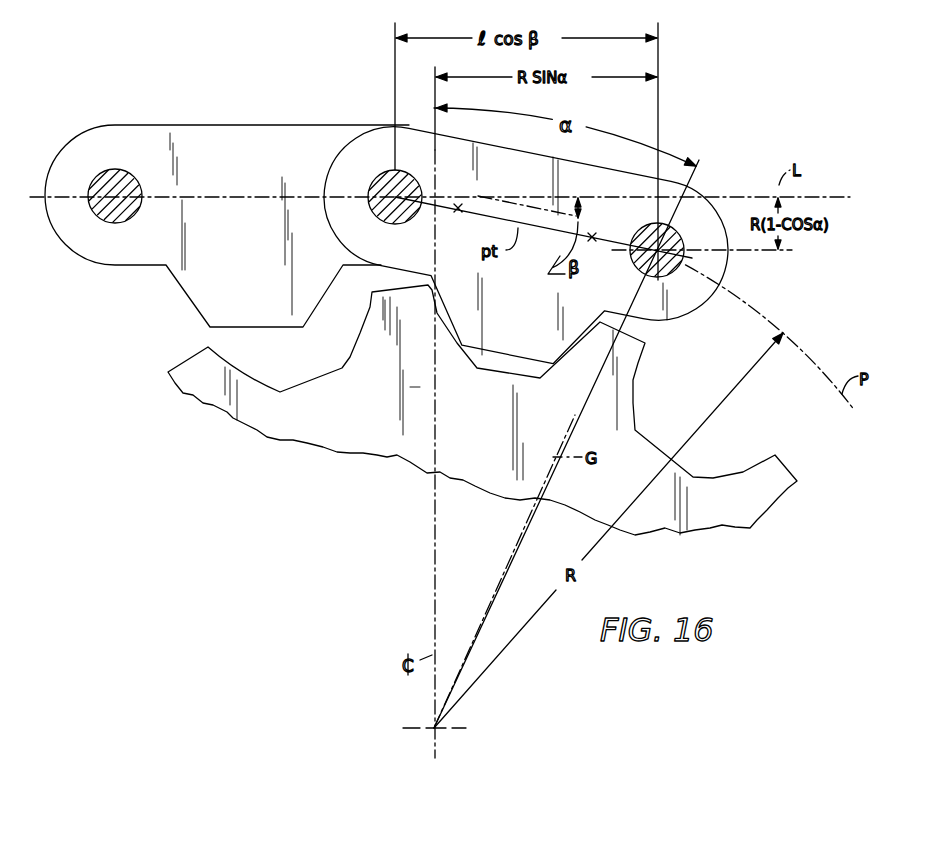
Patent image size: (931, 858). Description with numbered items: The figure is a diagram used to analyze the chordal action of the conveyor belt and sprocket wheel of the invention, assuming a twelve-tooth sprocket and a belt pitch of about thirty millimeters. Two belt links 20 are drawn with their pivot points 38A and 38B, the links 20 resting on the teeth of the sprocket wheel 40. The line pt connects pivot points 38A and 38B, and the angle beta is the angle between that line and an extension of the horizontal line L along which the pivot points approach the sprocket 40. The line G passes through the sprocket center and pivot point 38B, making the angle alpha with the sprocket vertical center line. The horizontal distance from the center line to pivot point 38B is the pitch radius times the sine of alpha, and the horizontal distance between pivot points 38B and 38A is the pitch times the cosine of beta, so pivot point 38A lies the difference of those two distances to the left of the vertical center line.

The chain link 20 is at (609, 186).
The pivot point 38A is at (372, 183).
The pivot point 38B is at (683, 262).
The sprocket 40 is at (738, 509).